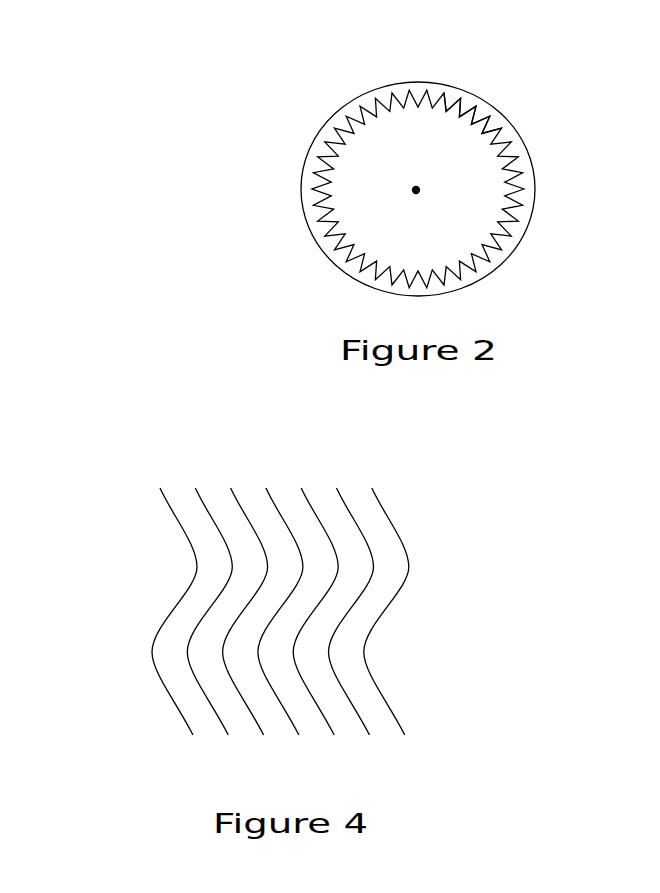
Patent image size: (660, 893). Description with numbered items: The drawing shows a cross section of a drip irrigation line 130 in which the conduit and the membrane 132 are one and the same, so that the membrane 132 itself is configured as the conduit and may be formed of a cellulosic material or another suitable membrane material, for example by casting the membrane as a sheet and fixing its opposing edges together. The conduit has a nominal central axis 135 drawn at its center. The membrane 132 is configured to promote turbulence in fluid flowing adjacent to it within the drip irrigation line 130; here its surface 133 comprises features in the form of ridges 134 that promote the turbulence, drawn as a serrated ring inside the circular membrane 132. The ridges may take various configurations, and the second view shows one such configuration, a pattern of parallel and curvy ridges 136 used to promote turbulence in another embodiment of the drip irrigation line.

In FIG. 2, the drip irrigation line 130 is at (238, 113).
In FIG. 2, the membrane 132 is at (535, 182).
In FIG. 2, the surface 133 is at (510, 133).
In FIG. 2, the ridges 134 is at (476, 117).
In FIG. 2, the nominal central axis 135 is at (407, 196).
In FIG. 4, the parallel and curvy ridges 136 is at (402, 537).